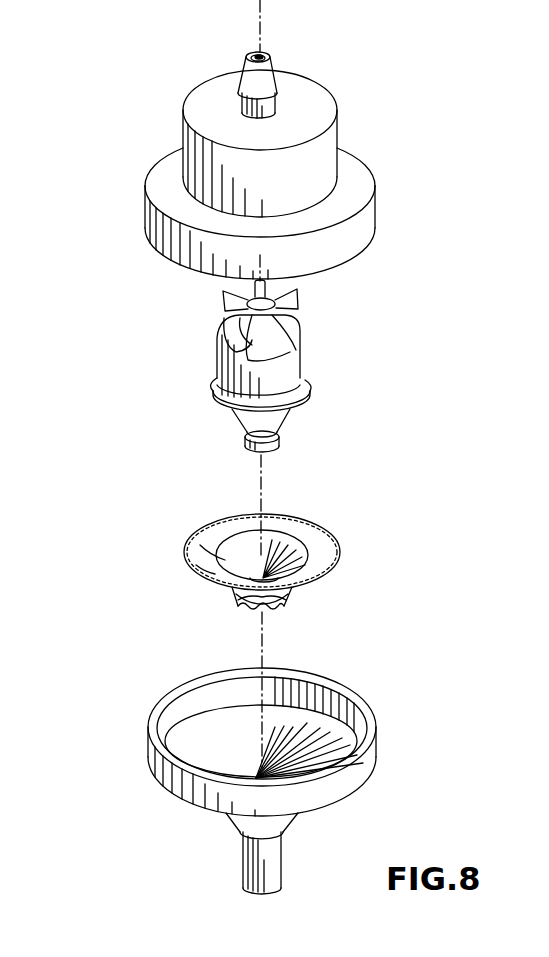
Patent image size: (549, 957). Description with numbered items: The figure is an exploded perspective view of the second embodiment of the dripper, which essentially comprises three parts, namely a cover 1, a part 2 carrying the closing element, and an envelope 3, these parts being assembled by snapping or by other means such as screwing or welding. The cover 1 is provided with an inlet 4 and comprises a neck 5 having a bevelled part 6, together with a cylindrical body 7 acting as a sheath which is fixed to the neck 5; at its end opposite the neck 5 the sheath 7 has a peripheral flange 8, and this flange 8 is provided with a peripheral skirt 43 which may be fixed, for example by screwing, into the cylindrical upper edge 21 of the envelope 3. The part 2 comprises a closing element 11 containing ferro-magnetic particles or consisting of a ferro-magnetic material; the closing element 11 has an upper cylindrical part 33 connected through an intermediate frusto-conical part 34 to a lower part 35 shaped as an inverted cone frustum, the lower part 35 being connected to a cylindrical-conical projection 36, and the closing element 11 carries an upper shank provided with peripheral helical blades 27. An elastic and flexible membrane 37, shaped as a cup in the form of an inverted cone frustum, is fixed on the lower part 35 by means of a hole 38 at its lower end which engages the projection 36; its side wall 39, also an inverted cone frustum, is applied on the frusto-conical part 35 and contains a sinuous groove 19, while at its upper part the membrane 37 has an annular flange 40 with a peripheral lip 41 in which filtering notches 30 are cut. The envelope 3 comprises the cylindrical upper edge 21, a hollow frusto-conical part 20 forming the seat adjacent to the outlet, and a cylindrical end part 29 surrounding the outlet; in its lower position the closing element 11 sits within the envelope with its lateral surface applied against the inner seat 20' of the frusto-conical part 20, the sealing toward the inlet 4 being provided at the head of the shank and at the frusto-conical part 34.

The cover 1 is at (366, 219).
The part of the dripper 2 is at (303, 365).
The envelope 3 is at (150, 768).
The inlet 4 is at (263, 55).
The neck 5 is at (275, 100).
The bevelled part 6 is at (274, 68).
The cylindrical body 7 is at (338, 129).
The peripheral flange 8 is at (364, 184).
The peripheral skirt 43 is at (180, 243).
The peripheral helical blades 27 is at (290, 328).
The upper cylindrical part 33 is at (280, 383).
The intermediate frusto-conical part 34 is at (216, 385).
The closing element 11 is at (240, 380).
The lower part 35 is at (274, 422).
The cylindrical-conical projection 36 is at (253, 434).
The filtering notches 30 is at (338, 563).
The membrane 37 is at (230, 532).
The hole 38 is at (293, 555).
The annular flange 40 is at (205, 548).
The peripheral lip 41 is at (200, 567).
The side wall 39 is at (243, 596).
The sinuous groove 19 is at (263, 608).
The cylindrical upper edge 21 is at (148, 743).
The seat 20' is at (290, 710).
The hollow frusto-conical part 20 is at (247, 835).
The cylindrical end part 29 is at (281, 870).